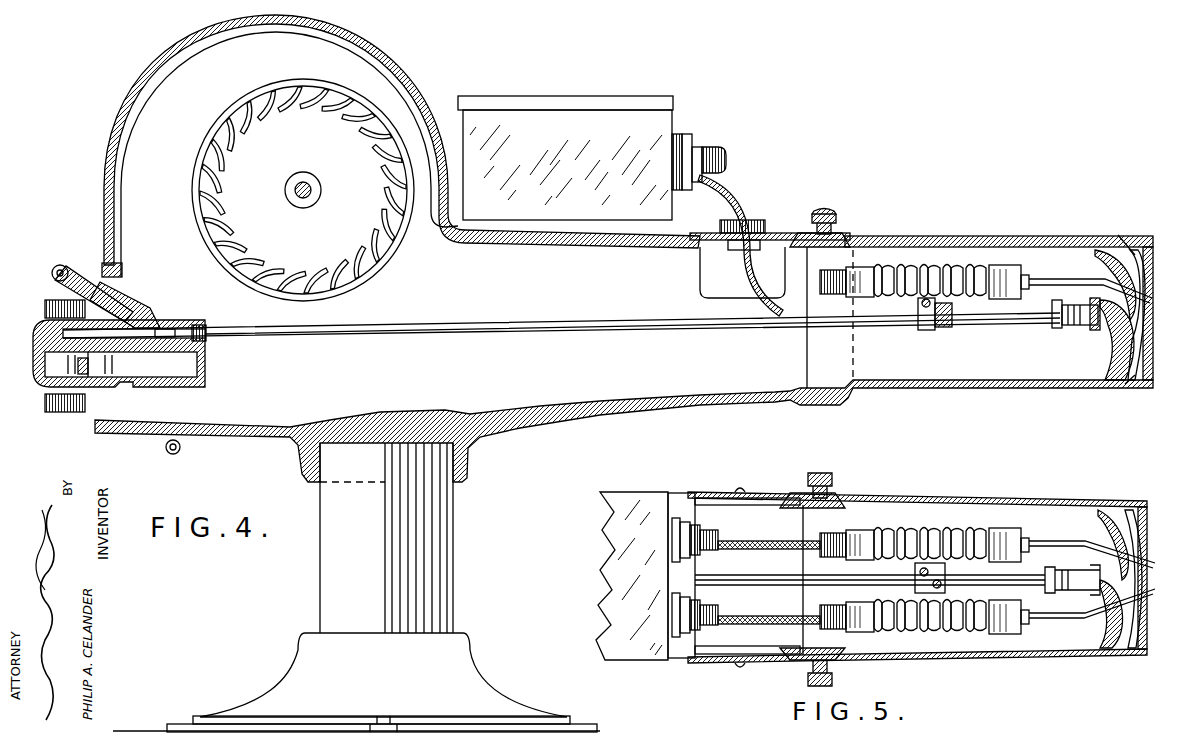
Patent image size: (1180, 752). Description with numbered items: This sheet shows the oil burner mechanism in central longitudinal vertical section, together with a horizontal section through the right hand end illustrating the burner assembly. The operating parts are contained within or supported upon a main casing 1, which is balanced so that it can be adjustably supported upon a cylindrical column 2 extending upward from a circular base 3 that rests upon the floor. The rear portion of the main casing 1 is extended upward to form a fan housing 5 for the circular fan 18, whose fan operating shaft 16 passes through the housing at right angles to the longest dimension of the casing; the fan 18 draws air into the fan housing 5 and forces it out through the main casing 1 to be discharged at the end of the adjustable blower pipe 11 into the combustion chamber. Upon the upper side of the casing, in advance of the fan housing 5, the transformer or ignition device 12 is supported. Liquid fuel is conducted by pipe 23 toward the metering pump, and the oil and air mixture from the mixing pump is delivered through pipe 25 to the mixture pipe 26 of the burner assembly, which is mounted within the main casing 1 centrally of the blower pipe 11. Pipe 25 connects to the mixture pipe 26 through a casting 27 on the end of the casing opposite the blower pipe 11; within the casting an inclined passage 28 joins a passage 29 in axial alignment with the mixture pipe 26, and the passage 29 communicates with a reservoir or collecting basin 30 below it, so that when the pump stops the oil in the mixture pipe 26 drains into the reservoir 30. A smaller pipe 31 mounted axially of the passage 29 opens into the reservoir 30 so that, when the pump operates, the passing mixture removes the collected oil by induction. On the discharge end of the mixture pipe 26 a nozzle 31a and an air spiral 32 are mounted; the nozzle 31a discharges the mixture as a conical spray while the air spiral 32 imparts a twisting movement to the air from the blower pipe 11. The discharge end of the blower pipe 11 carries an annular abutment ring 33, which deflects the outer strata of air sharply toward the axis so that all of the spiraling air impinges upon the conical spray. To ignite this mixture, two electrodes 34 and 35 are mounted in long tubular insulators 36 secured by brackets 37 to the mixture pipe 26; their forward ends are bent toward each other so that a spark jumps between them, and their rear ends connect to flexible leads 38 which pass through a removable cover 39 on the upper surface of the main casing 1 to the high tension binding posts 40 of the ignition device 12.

In FIG. 4, the main casing 1 is at (557, 408).
In FIG. 4, the cylindrical column 2 is at (440, 566).
In FIG. 4, the circular base 3 is at (495, 702).
In FIG. 4, the fan housing 5 is at (403, 63).
In FIG. 4, the blower pipe 11 is at (956, 390).
In FIG. 5, the blower pipe 11 is at (883, 500).
In FIG. 4, the transformer or ignition device 12 is at (553, 118).
In FIG. 5, the transformer or ignition device 12 is at (632, 500).
In FIG. 4, the fan operating shaft 16 is at (299, 200).
In FIG. 4, the fan 18 is at (257, 87).
In FIG. 4, the pipe 23 is at (164, 449).
In FIG. 4, the pipe 25 is at (62, 264).
In FIG. 4, the mixture pipe 26 is at (277, 342).
In FIG. 5, the mixture pipe 26 is at (747, 582).
In FIG. 4, the casting 27 is at (90, 406).
In FIG. 4, the inclined passage 28 is at (120, 308).
In FIG. 4, the passage 29 is at (183, 327).
In FIG. 4, the reservoir or collecting basin 30 is at (176, 364).
In FIG. 4, the smaller pipe 31 is at (143, 328).
In FIG. 4, the nozzle 31a is at (1123, 238).
In FIG. 5, the nozzle 31a is at (1130, 555).
In FIG. 4, the air spiral 32 is at (1103, 245).
In FIG. 4, the ring 33 is at (1113, 365).
In FIG. 5, the ring 33 is at (1105, 629).
In FIG. 5, the electrode 34 is at (1030, 619).
In FIG. 4, the electrode 35 is at (1042, 273).
In FIG. 5, the electrode 35 is at (1033, 541).
In FIG. 4, the tubular insulators 36 is at (998, 265).
In FIG. 5, the tubular insulators 36 is at (990, 632).
In FIG. 4, the brackets 37 is at (925, 332).
In FIG. 5, the brackets 37 is at (930, 632).
In FIG. 4, the flexible leads 38 is at (723, 188).
In FIG. 5, the flexible leads 38 is at (760, 620).
In FIG. 4, the removable cover 39 is at (770, 232).
In FIG. 5, the removable cover 39 is at (760, 660).
In FIG. 4, the high tension binding posts 40 is at (703, 147).
In FIG. 5, the high tension binding posts 40 is at (698, 625).